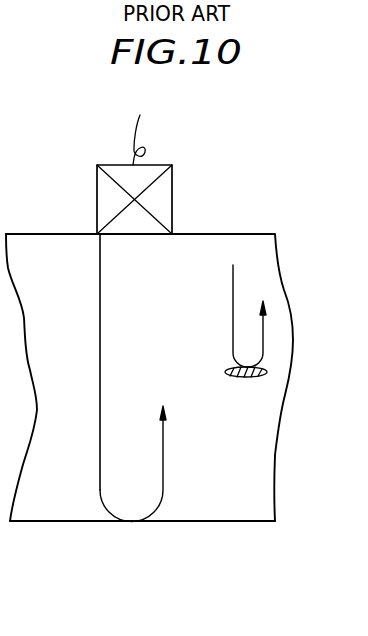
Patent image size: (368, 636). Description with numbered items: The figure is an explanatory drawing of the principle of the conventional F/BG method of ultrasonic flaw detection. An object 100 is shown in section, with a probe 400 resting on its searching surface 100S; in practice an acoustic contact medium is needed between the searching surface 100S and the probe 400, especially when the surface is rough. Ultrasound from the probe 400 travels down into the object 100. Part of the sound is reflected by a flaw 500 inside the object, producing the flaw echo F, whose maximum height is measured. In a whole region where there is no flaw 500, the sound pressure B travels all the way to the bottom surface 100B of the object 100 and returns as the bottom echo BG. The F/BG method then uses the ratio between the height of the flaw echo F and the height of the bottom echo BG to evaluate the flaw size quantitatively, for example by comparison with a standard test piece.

The object 100 is at (257, 267).
The searching surface 100S is at (50, 234).
The bottom surface 100B is at (88, 522).
The probe 400 is at (163, 196).
The flaw 500 is at (253, 378).
The F echo F is at (255, 316).
The BG echo BG is at (145, 464).